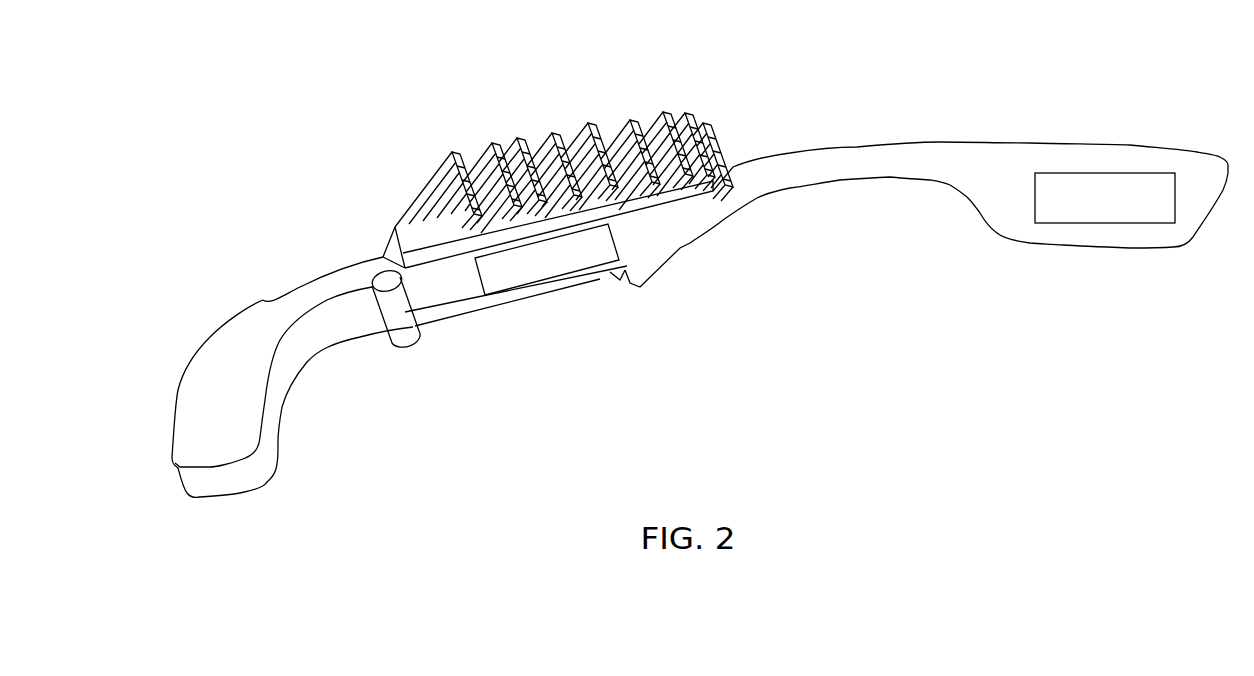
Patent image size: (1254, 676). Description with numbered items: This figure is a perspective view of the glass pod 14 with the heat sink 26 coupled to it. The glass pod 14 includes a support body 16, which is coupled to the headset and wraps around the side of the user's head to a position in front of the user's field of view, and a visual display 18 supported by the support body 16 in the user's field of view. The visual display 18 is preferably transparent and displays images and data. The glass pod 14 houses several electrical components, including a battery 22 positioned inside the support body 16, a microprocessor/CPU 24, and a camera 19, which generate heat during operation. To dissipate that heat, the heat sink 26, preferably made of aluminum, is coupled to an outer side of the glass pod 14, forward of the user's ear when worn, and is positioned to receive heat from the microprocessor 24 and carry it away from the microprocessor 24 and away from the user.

The glass pod 14 is at (957, 102).
The support body 16 is at (788, 140).
The visual display 18 is at (288, 463).
The camera 19 is at (167, 372).
The battery 22 is at (1107, 260).
The microprocessor/CPU 24 is at (557, 307).
The heat sink 26 is at (613, 87).